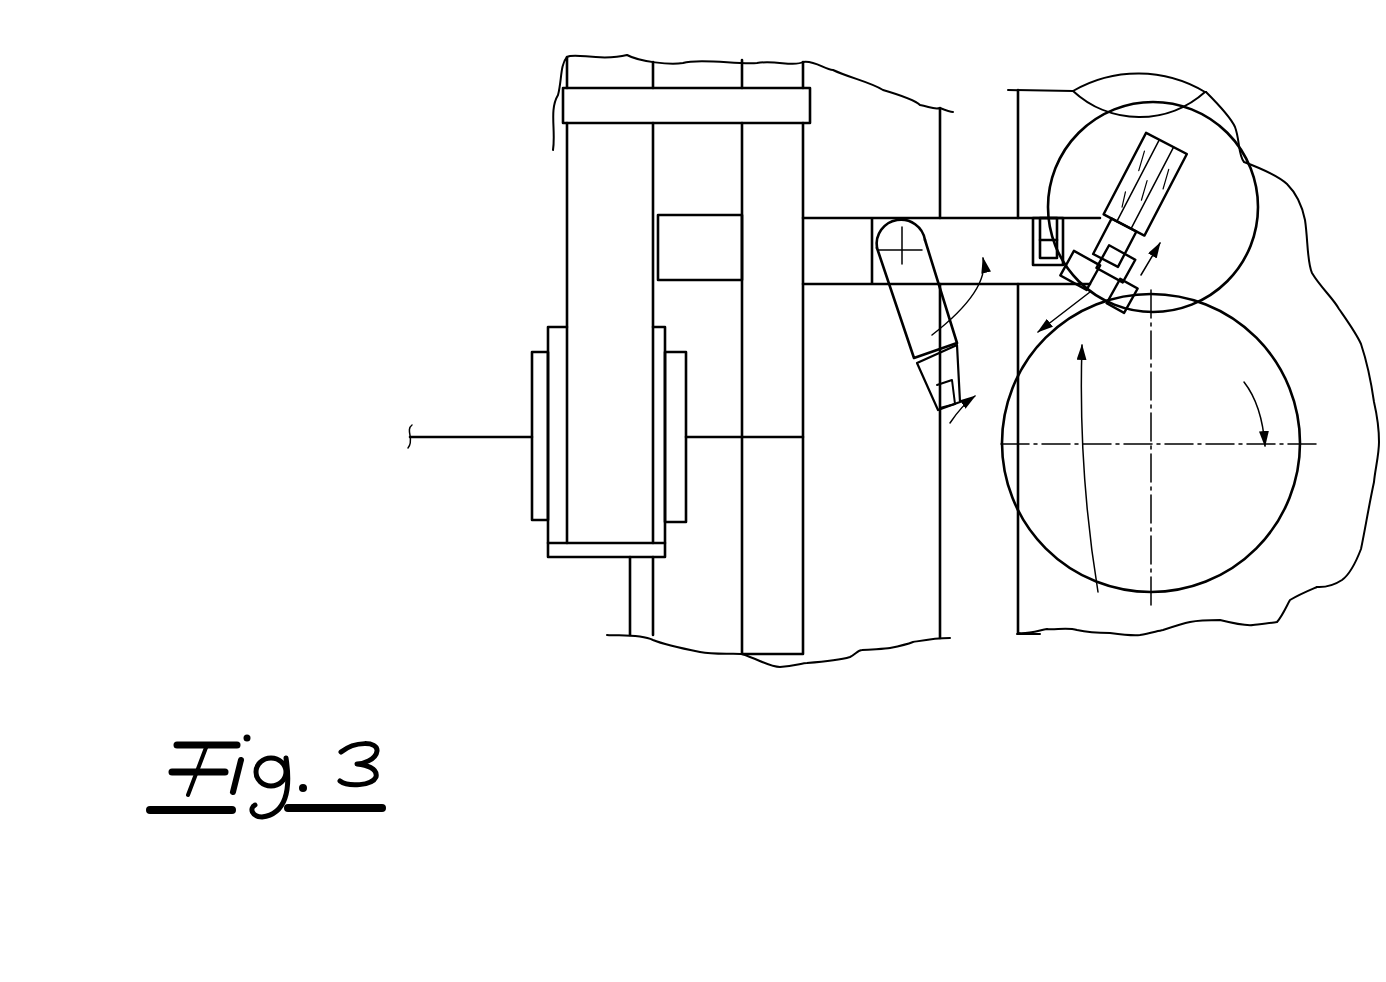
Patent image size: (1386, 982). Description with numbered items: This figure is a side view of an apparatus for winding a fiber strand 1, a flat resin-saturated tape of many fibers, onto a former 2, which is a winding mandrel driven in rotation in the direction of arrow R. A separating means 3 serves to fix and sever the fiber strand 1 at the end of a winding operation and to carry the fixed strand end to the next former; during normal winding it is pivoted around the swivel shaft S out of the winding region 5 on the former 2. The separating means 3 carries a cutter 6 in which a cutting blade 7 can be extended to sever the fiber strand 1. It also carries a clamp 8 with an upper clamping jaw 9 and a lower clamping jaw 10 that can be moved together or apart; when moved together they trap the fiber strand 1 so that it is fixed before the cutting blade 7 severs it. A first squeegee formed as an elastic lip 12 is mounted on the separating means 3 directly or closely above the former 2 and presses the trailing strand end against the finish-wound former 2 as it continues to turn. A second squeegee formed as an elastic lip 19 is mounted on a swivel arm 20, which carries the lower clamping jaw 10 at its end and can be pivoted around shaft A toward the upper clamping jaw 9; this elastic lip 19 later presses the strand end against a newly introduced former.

The fiber strand 1 is at (470, 435).
The former 2 is at (1233, 506).
The separating means 3 is at (1182, 190).
The winding region 5 is at (1094, 490).
The cutter 6 is at (1070, 222).
The cutting blade 7 is at (1195, 314).
The clamp 8 is at (886, 310).
The upper clamping jaw 9 is at (1043, 268).
The lower clamping jaw 10 is at (935, 408).
The elastic lip 12 is at (814, 438).
The elastic lip 19 is at (917, 365).
The swivel arm 20 is at (913, 311).
The shaft A is at (877, 243).
The arrow R is at (1258, 395).
The swivel shaft S is at (1023, 300).